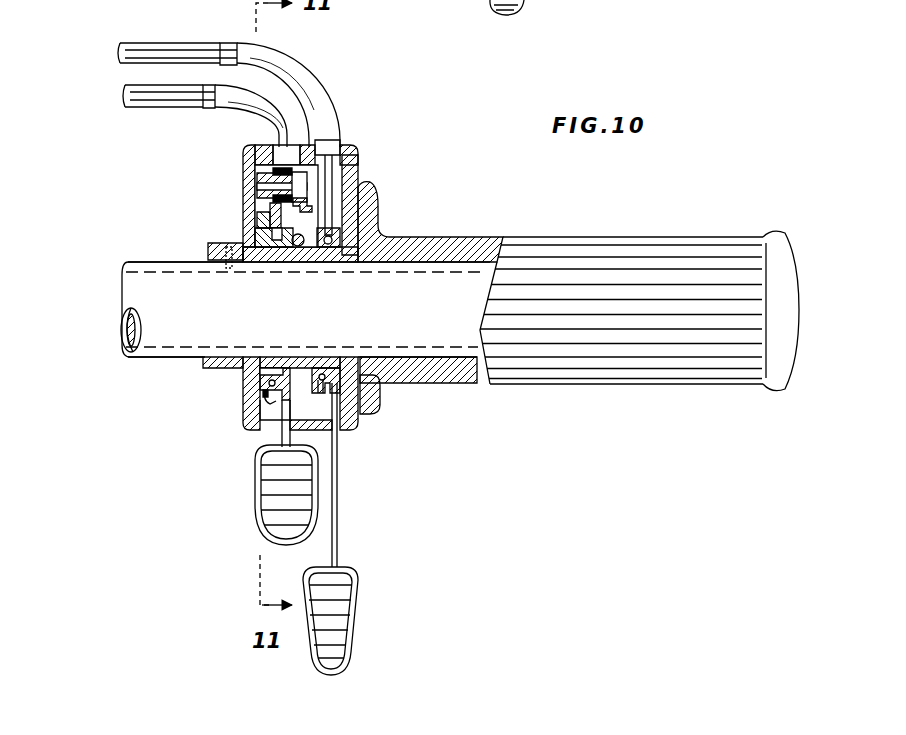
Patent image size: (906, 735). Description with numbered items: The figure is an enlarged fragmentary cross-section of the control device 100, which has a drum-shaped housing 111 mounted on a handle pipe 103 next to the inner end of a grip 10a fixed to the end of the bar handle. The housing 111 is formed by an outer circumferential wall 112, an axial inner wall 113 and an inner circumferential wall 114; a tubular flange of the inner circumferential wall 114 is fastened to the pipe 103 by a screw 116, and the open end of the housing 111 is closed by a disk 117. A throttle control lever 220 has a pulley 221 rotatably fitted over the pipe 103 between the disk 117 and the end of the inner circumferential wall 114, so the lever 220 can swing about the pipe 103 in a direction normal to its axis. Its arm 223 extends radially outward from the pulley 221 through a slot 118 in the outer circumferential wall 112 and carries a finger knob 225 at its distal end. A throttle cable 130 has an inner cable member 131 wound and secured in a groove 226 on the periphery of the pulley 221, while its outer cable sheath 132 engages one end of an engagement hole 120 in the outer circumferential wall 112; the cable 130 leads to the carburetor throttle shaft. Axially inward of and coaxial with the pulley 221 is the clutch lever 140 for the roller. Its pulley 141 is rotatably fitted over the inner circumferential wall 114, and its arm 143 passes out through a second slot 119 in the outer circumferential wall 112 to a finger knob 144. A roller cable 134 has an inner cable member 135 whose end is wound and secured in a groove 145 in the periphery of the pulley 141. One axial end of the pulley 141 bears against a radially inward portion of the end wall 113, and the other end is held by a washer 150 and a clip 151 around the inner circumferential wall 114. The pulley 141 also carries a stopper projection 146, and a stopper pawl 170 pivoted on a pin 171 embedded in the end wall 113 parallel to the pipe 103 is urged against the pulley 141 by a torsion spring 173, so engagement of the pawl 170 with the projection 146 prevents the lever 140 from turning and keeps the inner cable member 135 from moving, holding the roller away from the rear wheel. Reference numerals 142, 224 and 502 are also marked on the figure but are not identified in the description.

The grip 10a is at (635, 263).
The control device 100 is at (318, 160).
The handle pipe 103 is at (452, 287).
The housing 111 is at (240, 180).
The outer circumferential wall 112 is at (313, 143).
The axial inner wall 113 is at (262, 206).
The inner circumferential wall 114 is at (268, 255).
The screw 116 is at (228, 268).
The disk 117 is at (358, 187).
The slot 118 is at (340, 430).
The slot 119 is at (282, 433).
The engagement hole 120 is at (338, 150).
The throttle cable 130 is at (132, 44).
The inner cable member 131 is at (343, 365).
The outer cable sheath 132 is at (189, 50).
The roller cable 134 is at (150, 110).
The inner cable member 135 is at (268, 410).
The clutch lever 140 is at (248, 498).
The pulley 141 is at (265, 233).
The valve 142 is at (277, 367).
The arm 143 is at (278, 437).
The finger knob 144 is at (273, 510).
The groove 145 is at (262, 396).
The stopper projection 146 is at (283, 217).
The washer 150 is at (300, 250).
The clip 151 is at (210, 250).
The stopper pawl 170 is at (357, 177).
The pin 171 is at (267, 184).
The torsion spring 173 is at (283, 130).
The throttle control lever 220 is at (366, 602).
The pulley 221 is at (362, 384).
The arm 223 is at (323, 365).
The rod 224 is at (338, 486).
The finger knob 225 is at (338, 617).
The groove 226 is at (358, 240).
The recess 502 is at (371, 410).